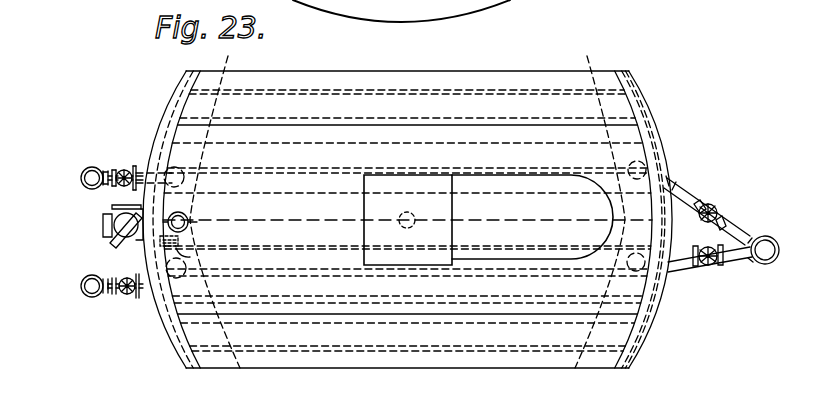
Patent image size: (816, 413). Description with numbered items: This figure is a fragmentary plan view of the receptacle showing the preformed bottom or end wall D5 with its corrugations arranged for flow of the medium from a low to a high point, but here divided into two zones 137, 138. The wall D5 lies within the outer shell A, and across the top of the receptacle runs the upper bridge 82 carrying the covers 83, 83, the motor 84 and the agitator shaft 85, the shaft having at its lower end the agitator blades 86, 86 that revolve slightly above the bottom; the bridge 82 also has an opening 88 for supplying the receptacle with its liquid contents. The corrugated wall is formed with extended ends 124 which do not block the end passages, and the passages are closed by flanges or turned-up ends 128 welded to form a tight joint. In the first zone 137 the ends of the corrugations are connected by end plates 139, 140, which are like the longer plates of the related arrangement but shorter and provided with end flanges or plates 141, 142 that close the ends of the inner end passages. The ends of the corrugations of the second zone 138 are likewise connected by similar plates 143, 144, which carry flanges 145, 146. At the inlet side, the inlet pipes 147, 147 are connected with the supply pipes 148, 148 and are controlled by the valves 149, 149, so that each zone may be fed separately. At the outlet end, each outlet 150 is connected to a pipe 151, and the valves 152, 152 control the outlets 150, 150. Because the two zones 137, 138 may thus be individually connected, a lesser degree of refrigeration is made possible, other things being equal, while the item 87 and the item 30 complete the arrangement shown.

The drum shell 30 is at (172, 108).
The cover 83 is at (438, 60).
The upper bridge 82 is at (645, 128).
The motor 84 is at (508, 188).
The agitator shaft 85 is at (411, 224).
The agitator blade 86 is at (124, 241).
The axis line 87 is at (287, 208).
The opening 88 is at (190, 257).
The extended end 124 is at (190, 219).
The turned-up end 128 is at (520, 0).
The zone 137 is at (509, 115).
The zone 138 is at (505, 340).
The end plate 139 is at (660, 152).
The end plate 140 is at (170, 130).
The end flange 141 is at (676, 185).
The end flange 142 is at (204, 181).
The end plate 143 is at (655, 320).
The end plate 144 is at (208, 209).
The flange 145 is at (608, 219).
The flange 146 is at (205, 236).
The inlet pipe 147 is at (147, 170).
The supply pipe 148 is at (80, 184).
The valve 149 is at (120, 166).
The outlet 150 is at (676, 178).
The pipe 151 is at (768, 243).
The valve 152 is at (718, 207).
The outer shell A is at (638, 98).
The preformed wall D5 is at (575, 375).